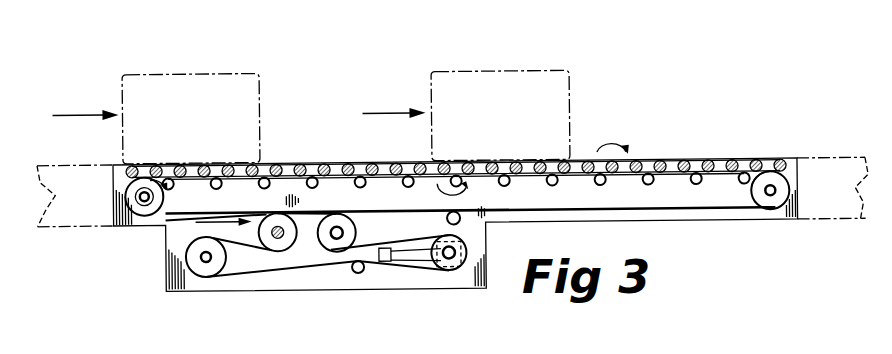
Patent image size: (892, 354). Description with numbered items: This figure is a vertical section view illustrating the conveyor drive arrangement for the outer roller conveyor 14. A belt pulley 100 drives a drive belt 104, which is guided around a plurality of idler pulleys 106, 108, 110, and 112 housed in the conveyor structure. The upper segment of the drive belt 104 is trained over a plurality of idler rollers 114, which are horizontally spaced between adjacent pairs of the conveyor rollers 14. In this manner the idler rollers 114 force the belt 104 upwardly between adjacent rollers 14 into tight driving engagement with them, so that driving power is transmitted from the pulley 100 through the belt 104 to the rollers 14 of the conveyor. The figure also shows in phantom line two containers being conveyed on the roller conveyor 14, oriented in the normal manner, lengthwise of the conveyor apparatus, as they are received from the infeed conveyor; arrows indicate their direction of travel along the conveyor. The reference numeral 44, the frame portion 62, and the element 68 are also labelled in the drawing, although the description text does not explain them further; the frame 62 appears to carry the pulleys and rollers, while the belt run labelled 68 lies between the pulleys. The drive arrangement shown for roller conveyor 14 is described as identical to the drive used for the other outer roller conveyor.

The conveyor 44 is at (284, 108).
The roller conveyor 14 is at (347, 165).
The idler rollers 114 is at (400, 185).
The idler pulley 112 is at (751, 200).
The idler pulley 110 is at (355, 236).
The idler pulley 106 is at (156, 211).
The frame 62 is at (165, 280).
The idler pulley 108 is at (218, 276).
The drive belt 68 is at (284, 253).
The drive belt 104 is at (417, 274).
The belt pulley 100 is at (268, 216).